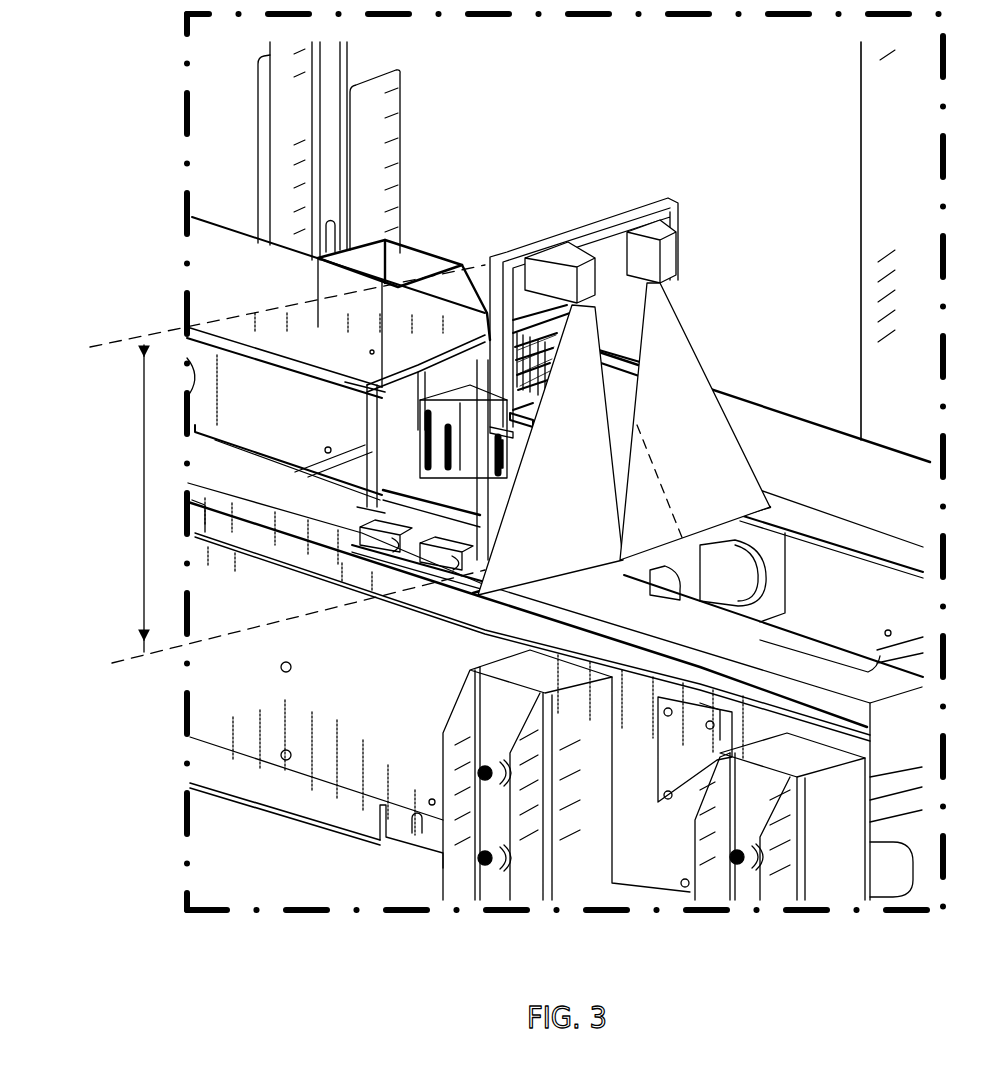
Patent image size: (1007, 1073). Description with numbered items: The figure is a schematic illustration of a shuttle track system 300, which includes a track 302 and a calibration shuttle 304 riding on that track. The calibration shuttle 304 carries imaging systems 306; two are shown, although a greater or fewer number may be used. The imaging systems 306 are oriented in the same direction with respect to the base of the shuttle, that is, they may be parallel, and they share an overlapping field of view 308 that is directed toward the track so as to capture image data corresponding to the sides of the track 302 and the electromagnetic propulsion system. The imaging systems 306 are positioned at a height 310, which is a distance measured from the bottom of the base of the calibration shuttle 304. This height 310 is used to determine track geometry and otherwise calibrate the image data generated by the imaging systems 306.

The shuttle track system 300 is at (583, 135).
The track 302 is at (799, 521).
The calibration shuttle 304 is at (514, 222).
The imaging systems 306 is at (665, 262).
The field of view 308 is at (712, 415).
The height 310 is at (123, 505).